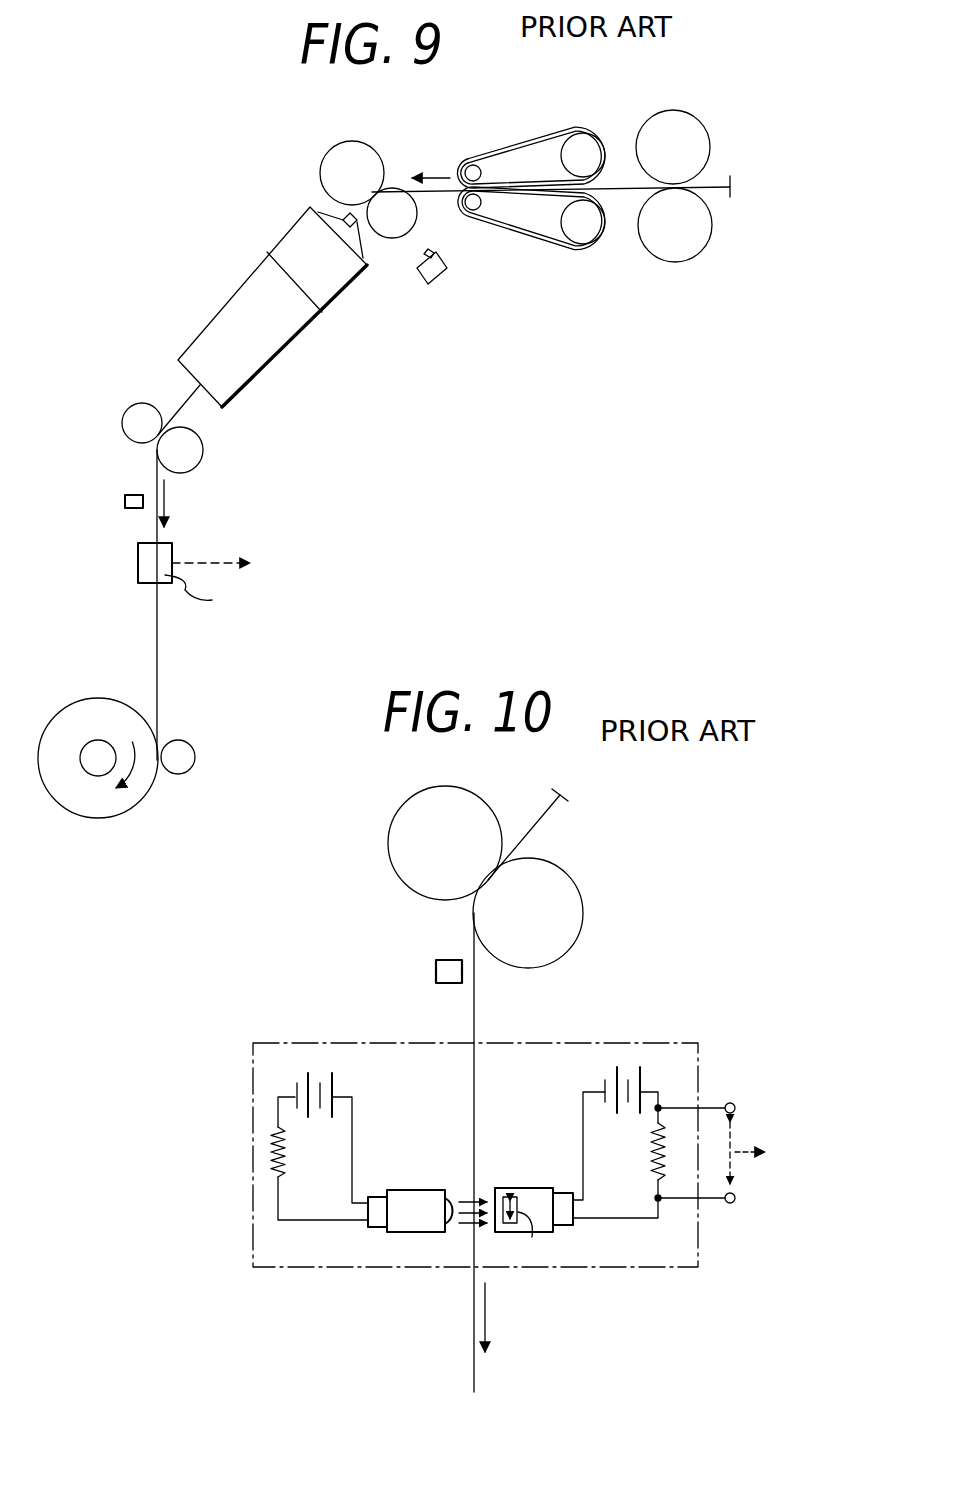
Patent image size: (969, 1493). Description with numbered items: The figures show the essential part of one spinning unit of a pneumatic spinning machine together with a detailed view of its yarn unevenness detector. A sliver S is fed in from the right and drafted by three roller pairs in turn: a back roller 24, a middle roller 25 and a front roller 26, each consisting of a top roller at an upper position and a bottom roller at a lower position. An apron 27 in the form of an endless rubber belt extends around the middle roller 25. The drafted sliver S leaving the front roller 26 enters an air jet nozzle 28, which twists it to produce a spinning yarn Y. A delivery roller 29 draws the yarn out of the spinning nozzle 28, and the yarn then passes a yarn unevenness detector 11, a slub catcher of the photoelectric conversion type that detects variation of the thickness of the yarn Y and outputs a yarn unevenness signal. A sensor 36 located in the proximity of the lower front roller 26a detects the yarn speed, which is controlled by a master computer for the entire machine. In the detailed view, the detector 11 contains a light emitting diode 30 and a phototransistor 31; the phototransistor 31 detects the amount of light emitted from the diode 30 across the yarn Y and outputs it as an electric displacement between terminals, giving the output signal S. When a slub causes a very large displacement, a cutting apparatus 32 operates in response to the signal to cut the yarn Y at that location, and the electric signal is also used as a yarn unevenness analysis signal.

In FIG. 9, the back roller 24 is at (683, 112).
In FIG. 9, the middle roller 25 is at (583, 143).
In FIG. 9, the front roller 26 is at (375, 142).
In FIG. 10, the front roller 26 is at (573, 915).
In FIG. 9, the lower front roller 26a is at (388, 240).
In FIG. 9, the apron 27 is at (518, 147).
In FIG. 9, the air jet nozzle 28 is at (245, 297).
In FIG. 9, the delivery roller 29 is at (195, 455).
In FIG. 9, the cutting apparatus 32 is at (130, 493).
In FIG. 10, the cutting apparatus 32 is at (436, 973).
In FIG. 9, the sensor 36 is at (443, 283).
In FIG. 9, the yarn unevenness detector 11 is at (162, 555).
In FIG. 10, the yarn unevenness detector 11 is at (640, 1040).
In FIG. 10, the light emitting diode 30 is at (417, 1198).
In FIG. 10, the phototransistor 31 is at (538, 1190).
In FIG. 9, the sliver S is at (720, 182).
In FIG. 10, the sliver S is at (763, 1153).
In FIG. 9, the spinning yarn Y is at (182, 400).
In FIG. 10, the spinning yarn Y is at (473, 1008).